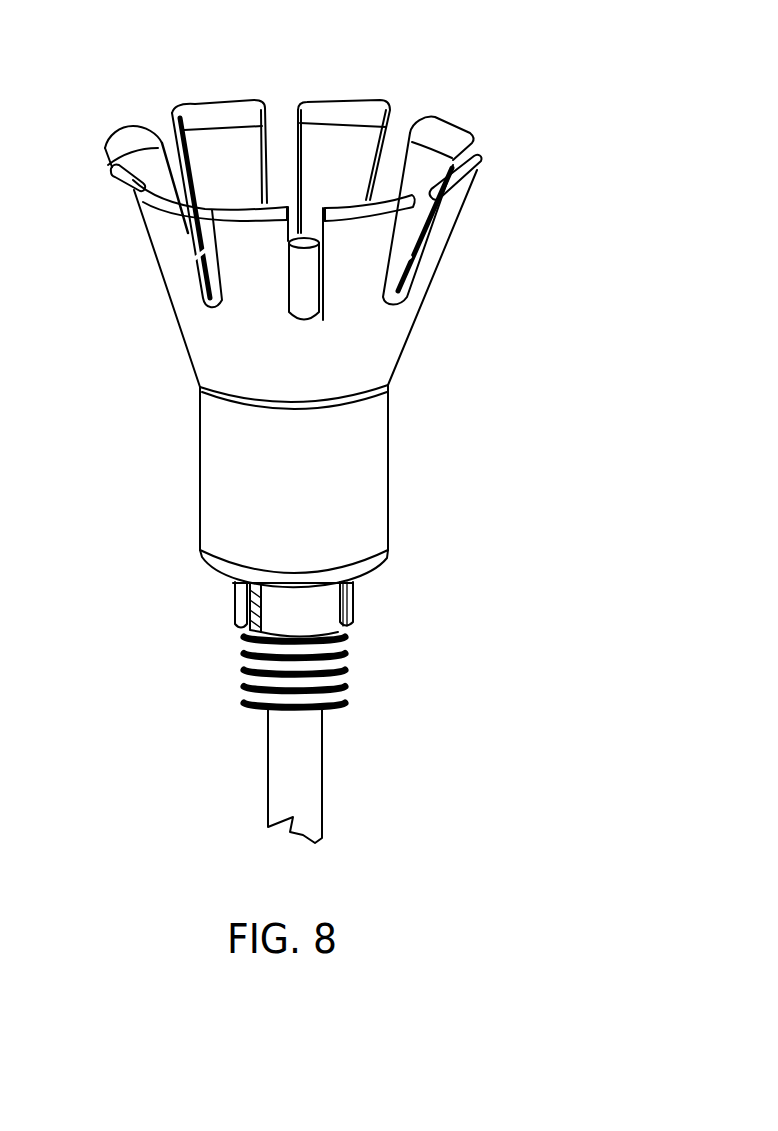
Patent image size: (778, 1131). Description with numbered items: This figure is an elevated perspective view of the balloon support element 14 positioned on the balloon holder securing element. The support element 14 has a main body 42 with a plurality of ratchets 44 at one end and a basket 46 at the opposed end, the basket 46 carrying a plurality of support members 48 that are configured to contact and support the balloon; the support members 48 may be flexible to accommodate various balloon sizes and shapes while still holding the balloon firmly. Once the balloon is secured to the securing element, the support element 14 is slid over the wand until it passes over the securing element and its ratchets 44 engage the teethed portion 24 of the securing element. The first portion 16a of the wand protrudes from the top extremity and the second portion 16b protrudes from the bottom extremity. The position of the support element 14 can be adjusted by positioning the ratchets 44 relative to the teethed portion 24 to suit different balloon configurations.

The support element 14 is at (530, 423).
The first portion of the wand 16a is at (302, 275).
The second portion of the wand 16b is at (308, 772).
The teethed portion 24 is at (345, 666).
The main body 42 is at (372, 473).
The ratchets 44 is at (350, 586).
The basket 46 is at (450, 242).
The support members 48 is at (238, 120).